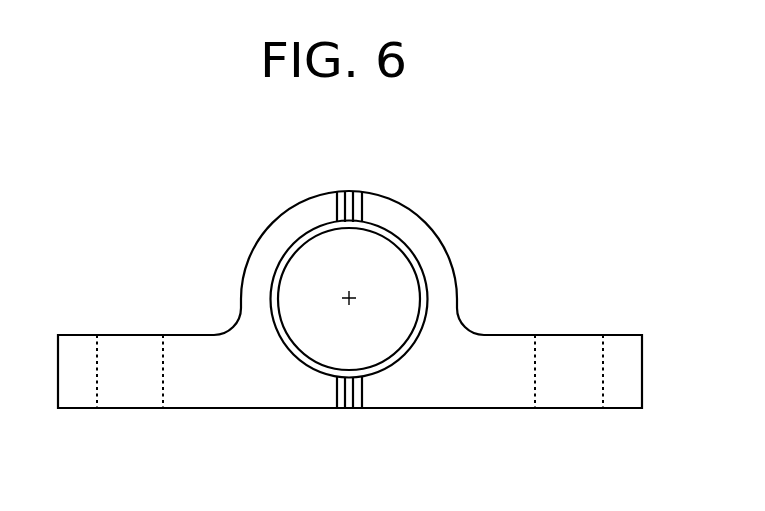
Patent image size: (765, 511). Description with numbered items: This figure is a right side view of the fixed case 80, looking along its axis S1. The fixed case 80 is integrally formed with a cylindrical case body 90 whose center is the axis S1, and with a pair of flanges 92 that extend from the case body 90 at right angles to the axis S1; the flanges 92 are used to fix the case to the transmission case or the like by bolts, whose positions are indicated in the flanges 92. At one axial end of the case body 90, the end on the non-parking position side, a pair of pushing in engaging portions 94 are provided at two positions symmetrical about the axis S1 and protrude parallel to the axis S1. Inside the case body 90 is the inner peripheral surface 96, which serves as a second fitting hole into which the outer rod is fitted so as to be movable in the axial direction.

The fixed case 80 is at (445, 175).
The case body 90 is at (438, 253).
The flanges 92 is at (125, 390).
The pushing in engaging portions 94 is at (338, 211).
The inner peripheral surface 96 is at (282, 302).
The axis S1 is at (363, 315).